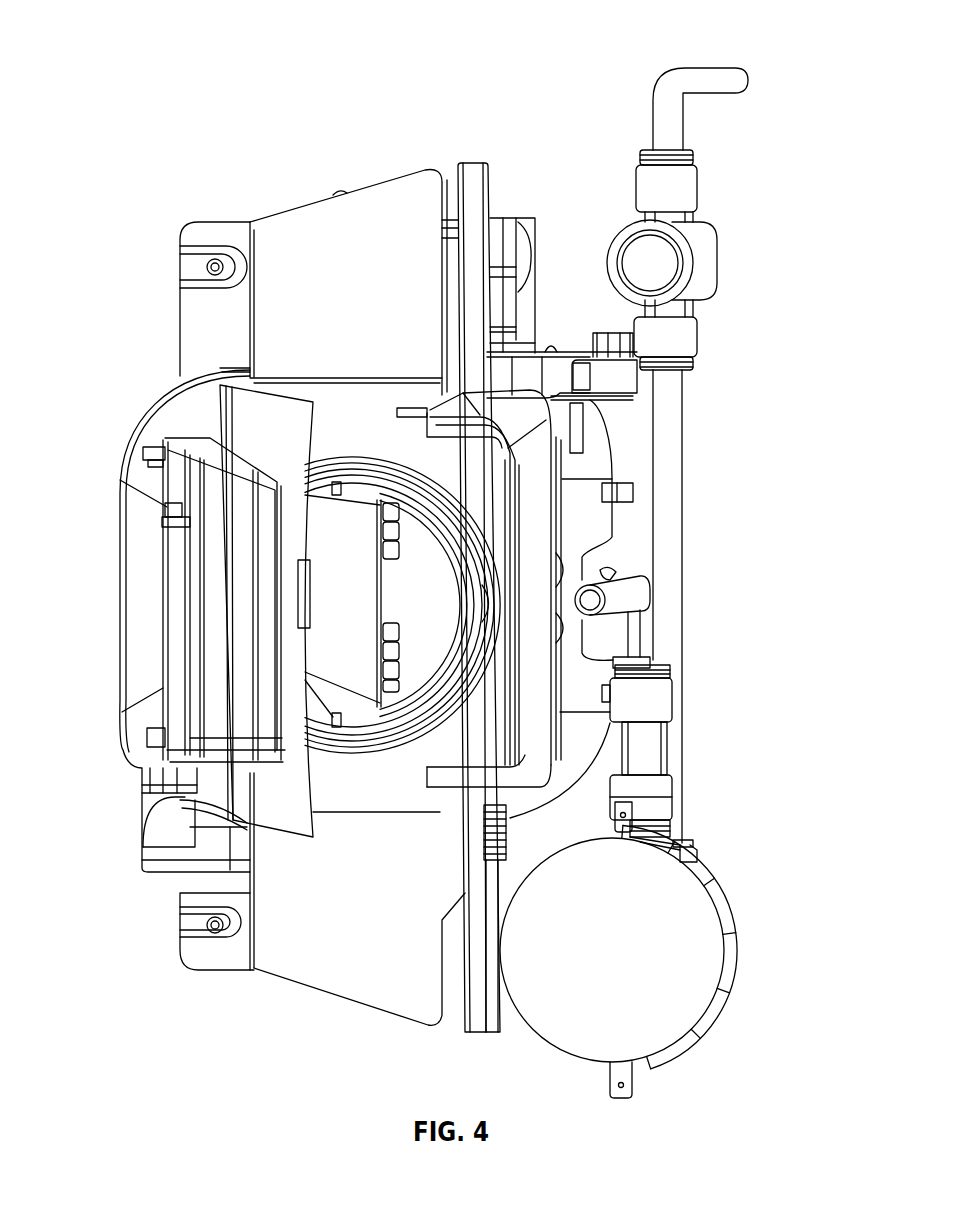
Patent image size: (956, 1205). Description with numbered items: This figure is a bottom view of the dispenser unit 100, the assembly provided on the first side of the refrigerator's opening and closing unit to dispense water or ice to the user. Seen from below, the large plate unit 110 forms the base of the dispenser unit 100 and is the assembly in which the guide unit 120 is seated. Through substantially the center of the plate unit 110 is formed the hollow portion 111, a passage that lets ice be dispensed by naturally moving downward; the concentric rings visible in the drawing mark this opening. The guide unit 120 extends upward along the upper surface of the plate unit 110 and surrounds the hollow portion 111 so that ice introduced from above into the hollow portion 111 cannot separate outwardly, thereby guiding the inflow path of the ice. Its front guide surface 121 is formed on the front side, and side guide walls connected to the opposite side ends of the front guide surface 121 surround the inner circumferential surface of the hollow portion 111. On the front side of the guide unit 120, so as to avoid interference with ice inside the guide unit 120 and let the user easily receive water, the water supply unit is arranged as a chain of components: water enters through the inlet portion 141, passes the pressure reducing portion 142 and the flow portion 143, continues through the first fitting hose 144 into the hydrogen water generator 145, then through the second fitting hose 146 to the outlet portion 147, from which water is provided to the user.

The dispenser unit 100 is at (190, 130).
The plate unit 110 is at (128, 428).
The hollow portion 111 is at (413, 586).
The guide unit 120 is at (622, 470).
The front guide surface 121 is at (598, 528).
The inlet portion 141 is at (697, 93).
The pressure reducing portion 142 is at (697, 243).
The flow portion 143 is at (675, 403).
The first fitting hose 144 is at (703, 860).
The hydrogen water generator 145 is at (660, 937).
The second fitting hose 146 is at (660, 790).
The outlet portion 147 is at (617, 590).